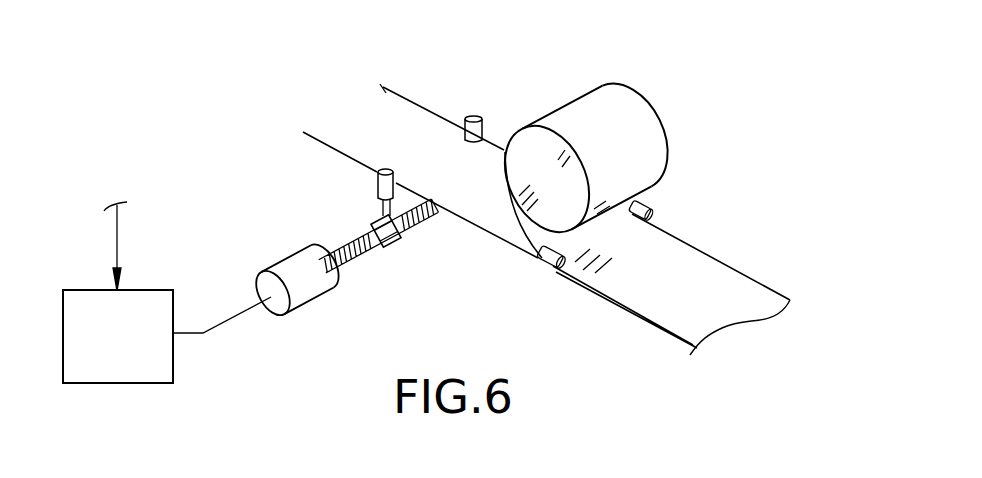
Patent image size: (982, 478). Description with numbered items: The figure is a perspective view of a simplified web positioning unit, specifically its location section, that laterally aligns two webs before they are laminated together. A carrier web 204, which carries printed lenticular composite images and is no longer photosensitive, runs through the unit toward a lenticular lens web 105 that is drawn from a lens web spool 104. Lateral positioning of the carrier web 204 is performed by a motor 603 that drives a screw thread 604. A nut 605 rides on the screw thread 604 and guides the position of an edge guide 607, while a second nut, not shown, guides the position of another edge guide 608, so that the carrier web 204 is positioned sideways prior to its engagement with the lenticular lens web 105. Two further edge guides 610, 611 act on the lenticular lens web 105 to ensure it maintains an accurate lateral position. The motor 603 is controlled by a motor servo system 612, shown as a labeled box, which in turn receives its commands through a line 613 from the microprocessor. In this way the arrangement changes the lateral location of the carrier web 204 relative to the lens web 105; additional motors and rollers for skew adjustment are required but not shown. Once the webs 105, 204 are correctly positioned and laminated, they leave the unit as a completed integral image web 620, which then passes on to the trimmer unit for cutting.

The lens web spool 104 is at (605, 82).
The lenticular lens web 105 is at (520, 227).
The carrier web 204 is at (433, 58).
The motor 603 is at (277, 262).
The screw thread 604 is at (340, 243).
The nut 605 is at (385, 246).
The edge guide 607 is at (420, 137).
The edge guide 608 is at (475, 117).
The edge guide 610 is at (650, 210).
The edge guide 611 is at (533, 263).
The motor servo system 612 is at (173, 353).
The line 613 is at (117, 243).
The integral image web 620 is at (807, 263).